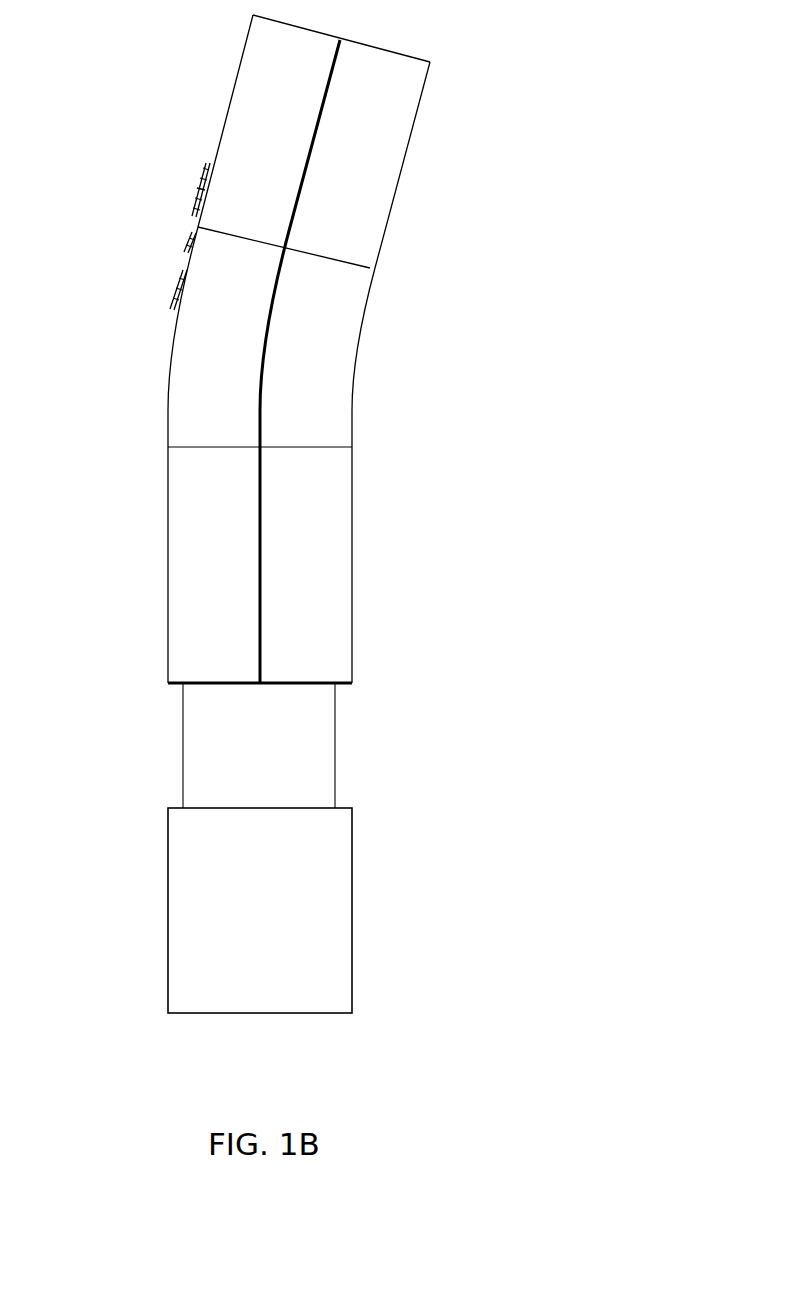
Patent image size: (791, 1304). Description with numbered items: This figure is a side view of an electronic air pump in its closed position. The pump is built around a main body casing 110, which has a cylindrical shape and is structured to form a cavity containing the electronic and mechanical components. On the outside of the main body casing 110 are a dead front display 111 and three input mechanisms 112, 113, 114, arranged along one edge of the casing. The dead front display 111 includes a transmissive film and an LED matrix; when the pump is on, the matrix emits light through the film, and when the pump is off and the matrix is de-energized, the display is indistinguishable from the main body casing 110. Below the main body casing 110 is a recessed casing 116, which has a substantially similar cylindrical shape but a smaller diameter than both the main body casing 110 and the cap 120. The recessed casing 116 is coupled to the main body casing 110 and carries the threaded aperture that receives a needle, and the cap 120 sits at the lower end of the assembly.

The main body casing 110 is at (433, 189).
The dead front display 111 is at (231, 72).
The input mechanism 112 is at (188, 182).
The input mechanism 113 is at (178, 238).
The input mechanism 114 is at (167, 284).
The recessed casing 116 is at (340, 750).
The cap 120 is at (360, 928).